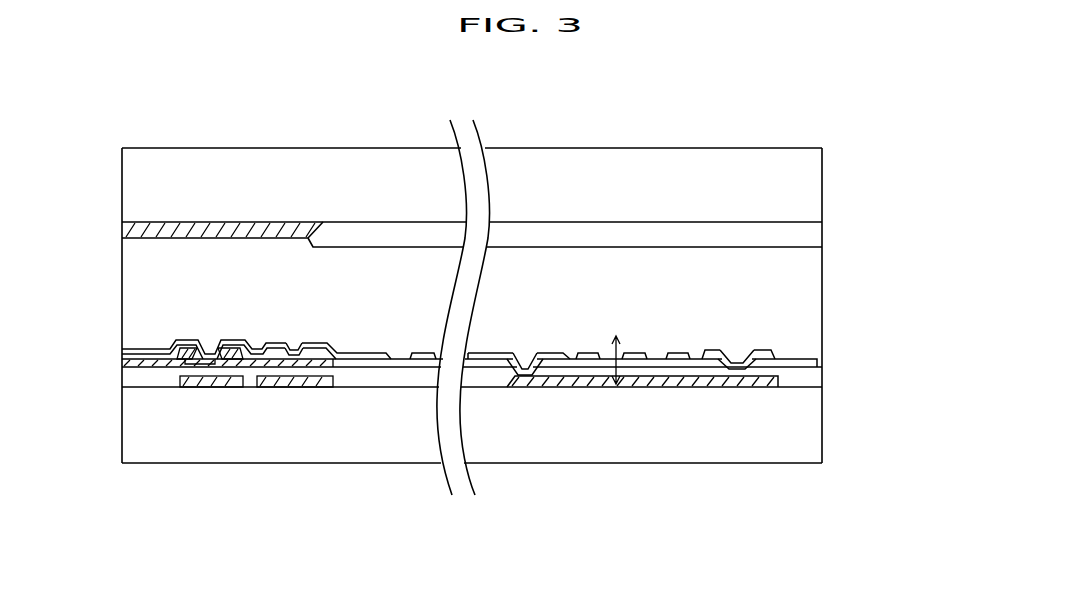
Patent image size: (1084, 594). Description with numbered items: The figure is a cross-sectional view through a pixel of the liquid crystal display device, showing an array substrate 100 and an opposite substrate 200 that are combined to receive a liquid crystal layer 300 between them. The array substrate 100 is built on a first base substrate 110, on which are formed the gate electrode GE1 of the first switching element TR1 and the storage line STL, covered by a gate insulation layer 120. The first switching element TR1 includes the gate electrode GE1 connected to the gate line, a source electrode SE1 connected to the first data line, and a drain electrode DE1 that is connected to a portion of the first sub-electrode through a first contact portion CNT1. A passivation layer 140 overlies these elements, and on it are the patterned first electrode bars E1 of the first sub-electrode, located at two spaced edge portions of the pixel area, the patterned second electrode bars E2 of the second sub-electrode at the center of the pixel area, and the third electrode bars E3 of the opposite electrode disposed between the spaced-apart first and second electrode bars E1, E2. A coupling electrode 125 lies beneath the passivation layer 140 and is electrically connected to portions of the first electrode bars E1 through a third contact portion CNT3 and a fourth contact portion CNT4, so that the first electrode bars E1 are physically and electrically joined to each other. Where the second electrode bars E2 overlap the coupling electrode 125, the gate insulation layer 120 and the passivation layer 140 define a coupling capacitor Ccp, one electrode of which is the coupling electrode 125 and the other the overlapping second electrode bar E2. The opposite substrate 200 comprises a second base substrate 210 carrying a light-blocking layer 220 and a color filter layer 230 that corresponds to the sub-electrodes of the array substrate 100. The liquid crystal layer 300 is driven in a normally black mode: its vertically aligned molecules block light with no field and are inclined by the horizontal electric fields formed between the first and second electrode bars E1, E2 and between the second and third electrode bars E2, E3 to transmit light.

The array substrate 100 is at (527, 406).
The first base substrate 110 is at (798, 415).
The gate insulation layer 120 is at (798, 380).
The coupling electrode 125 is at (690, 383).
The passivation layer 140 is at (798, 362).
The opposite substrate 200 is at (527, 197).
The second base substrate 210 is at (798, 208).
The light-blocking layer 220 is at (253, 228).
The color filter layer 230 is at (798, 236).
The liquid crystal layer 300 is at (829, 248).
The first switching element TR1 is at (228, 457).
The source electrode SE1 is at (163, 362).
The gate electrode GE1 is at (212, 380).
The drain electrode DE1 is at (253, 363).
The storage line STL is at (302, 382).
The first electrode bars E1 is at (328, 343).
The second electrode bars E2 is at (673, 352).
The third electrode bars E3 is at (421, 352).
The first contact portion CNT1 is at (290, 345).
The third contact portion CNT3 is at (525, 352).
The fourth contact portion CNT4 is at (737, 350).
The coupling capacitor Ccp is at (617, 385).